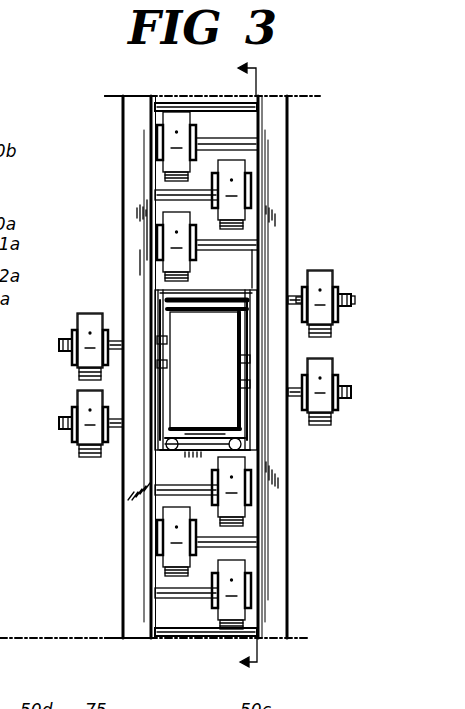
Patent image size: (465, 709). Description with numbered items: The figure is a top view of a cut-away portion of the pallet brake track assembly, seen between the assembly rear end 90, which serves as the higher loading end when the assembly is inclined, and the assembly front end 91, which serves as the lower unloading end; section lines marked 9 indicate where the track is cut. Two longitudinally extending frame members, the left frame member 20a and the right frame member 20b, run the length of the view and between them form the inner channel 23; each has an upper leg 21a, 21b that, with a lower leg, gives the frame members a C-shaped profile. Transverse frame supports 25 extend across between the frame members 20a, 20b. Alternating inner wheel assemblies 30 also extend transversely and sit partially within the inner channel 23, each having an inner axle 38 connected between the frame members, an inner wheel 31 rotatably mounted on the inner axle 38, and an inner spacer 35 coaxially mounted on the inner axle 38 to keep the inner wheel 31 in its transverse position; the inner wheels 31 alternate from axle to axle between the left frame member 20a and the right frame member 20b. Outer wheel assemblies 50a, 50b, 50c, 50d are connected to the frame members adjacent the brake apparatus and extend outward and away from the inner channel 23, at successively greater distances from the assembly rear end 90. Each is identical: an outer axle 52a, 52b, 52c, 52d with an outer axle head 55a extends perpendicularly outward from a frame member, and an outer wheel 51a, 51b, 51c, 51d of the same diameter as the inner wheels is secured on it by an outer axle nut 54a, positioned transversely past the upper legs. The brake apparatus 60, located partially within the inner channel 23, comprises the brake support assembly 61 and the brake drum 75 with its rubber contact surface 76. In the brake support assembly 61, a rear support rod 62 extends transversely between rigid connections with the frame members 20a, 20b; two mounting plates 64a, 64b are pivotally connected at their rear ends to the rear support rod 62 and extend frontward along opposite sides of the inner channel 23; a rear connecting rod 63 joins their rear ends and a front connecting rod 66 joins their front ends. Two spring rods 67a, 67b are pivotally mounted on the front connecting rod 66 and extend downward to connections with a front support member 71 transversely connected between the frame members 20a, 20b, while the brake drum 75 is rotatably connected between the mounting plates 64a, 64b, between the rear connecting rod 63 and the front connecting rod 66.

The section line 9 is at (240, 364).
The left frame member 20a is at (133, 109).
The right frame member 20b is at (275, 113).
The upper leg 21a is at (130, 134).
The upper leg 21b is at (278, 132).
The inner channel 23 is at (218, 122).
The transverse frame supports 25 is at (178, 108).
The alternating inner wheel assemblies 30 is at (138, 232).
The inner wheel 31 is at (136, 212).
The inner spacer 35 is at (260, 208).
The inner axle 38 is at (135, 269).
The first outer wheel assembly 50a is at (347, 283).
The second outer wheel assembly 50b is at (62, 334).
The third outer wheel assembly 50c is at (349, 416).
The fourth outer wheel assembly 50d is at (58, 436).
The outer wheel 51a is at (335, 273).
The outer wheel 51b is at (83, 322).
The outer wheel 51c is at (333, 412).
The outer wheel 51d is at (83, 400).
The first outer axle 52a is at (354, 303).
The second outer axle 52b is at (58, 345).
The third outer axle 52c is at (354, 389).
The fourth outer axle 52d is at (57, 425).
The outer axle nut 54a is at (354, 297).
The outer axle head 55a is at (275, 287).
The brake apparatus 60 is at (155, 447).
The brake support assembly 61 is at (166, 451).
The rear support rod 62 is at (247, 235).
The rear connecting rod 63 is at (228, 288).
The mounting plate 64a is at (163, 322).
The mounting plate 64b is at (246, 340).
The front connecting rod 66 is at (150, 456).
The spring rod 67a is at (132, 483).
The spring rod 67b is at (276, 470).
The front support member 71 is at (182, 456).
The brake drum 75 is at (218, 384).
The rubber contact surface 76 is at (217, 415).
The assembly rear end 90 is at (136, 86).
The assembly front end 91 is at (130, 650).